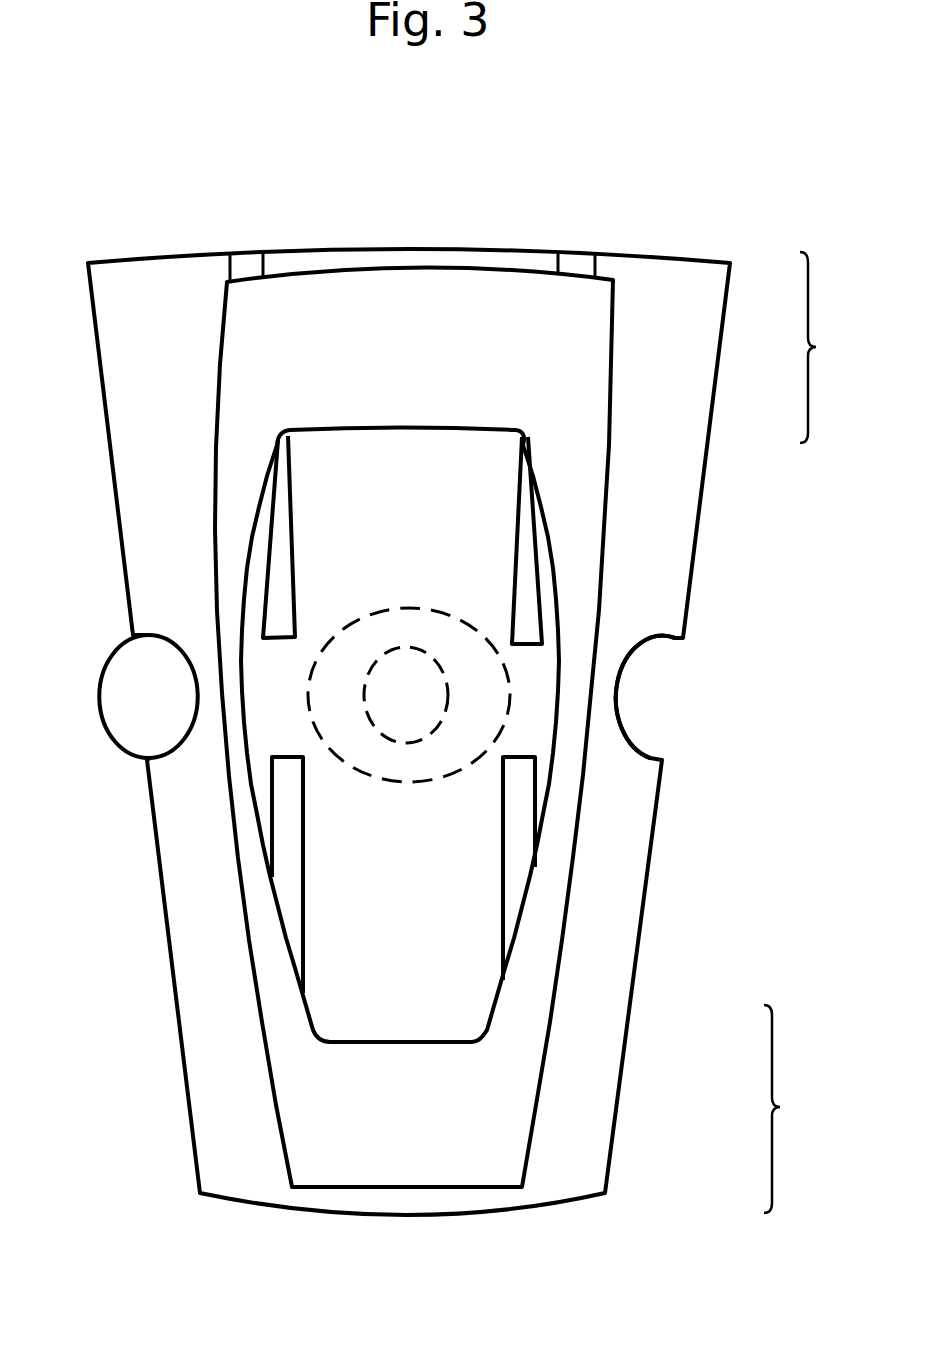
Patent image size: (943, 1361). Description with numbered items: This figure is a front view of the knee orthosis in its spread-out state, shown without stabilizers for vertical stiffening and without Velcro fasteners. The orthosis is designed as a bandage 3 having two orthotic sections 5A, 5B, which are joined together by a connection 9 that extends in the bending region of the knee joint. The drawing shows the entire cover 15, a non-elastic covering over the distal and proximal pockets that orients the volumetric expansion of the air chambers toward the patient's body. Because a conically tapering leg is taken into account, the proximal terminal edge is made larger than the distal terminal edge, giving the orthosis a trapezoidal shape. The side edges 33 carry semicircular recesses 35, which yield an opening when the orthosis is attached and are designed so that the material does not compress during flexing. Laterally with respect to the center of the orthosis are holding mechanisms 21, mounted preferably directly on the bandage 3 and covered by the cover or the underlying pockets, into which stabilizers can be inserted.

The bandage 3 is at (612, 1166).
The orthotic section 5A is at (834, 347).
The orthotic section 5B is at (798, 1109).
The connection 9 is at (573, 687).
The cover 15 is at (361, 250).
The holding mechanisms 21 is at (270, 525).
The side edges 33 is at (128, 606).
The semicircular recesses 35 is at (173, 747).